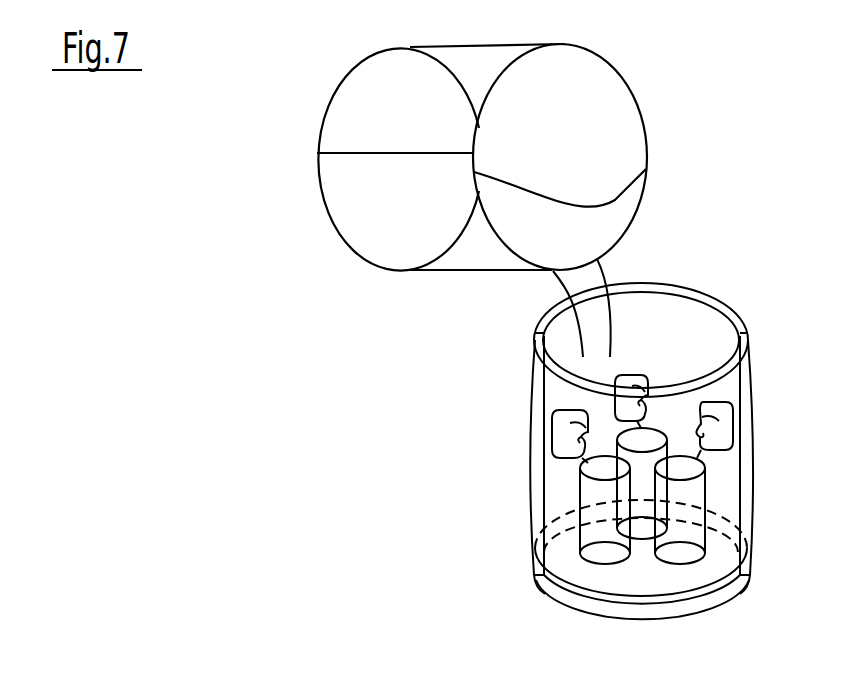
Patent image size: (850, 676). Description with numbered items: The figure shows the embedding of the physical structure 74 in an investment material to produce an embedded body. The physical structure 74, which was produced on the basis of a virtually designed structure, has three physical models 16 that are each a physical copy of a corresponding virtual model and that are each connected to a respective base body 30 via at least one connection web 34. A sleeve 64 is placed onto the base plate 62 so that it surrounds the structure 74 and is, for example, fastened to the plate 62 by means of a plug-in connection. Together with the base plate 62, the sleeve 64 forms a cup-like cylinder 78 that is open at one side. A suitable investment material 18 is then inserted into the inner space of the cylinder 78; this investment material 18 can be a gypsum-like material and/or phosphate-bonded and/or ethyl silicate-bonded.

The investment material 18 is at (587, 283).
The cup-like cylinder 78 is at (470, 474).
The sleeve 64 is at (740, 316).
The physical structure 74 is at (668, 376).
The physical models 16 is at (720, 423).
The connection web 34 is at (703, 453).
The base body 30 is at (687, 532).
The base plate 62 is at (667, 578).